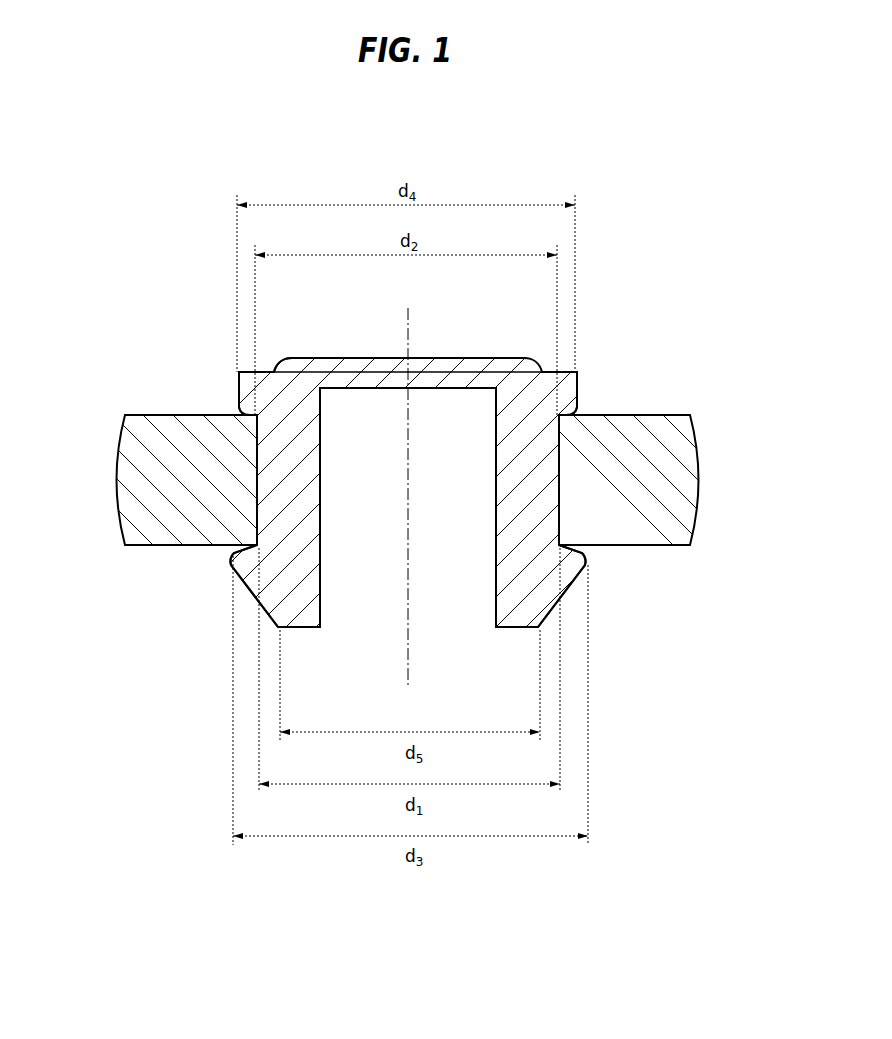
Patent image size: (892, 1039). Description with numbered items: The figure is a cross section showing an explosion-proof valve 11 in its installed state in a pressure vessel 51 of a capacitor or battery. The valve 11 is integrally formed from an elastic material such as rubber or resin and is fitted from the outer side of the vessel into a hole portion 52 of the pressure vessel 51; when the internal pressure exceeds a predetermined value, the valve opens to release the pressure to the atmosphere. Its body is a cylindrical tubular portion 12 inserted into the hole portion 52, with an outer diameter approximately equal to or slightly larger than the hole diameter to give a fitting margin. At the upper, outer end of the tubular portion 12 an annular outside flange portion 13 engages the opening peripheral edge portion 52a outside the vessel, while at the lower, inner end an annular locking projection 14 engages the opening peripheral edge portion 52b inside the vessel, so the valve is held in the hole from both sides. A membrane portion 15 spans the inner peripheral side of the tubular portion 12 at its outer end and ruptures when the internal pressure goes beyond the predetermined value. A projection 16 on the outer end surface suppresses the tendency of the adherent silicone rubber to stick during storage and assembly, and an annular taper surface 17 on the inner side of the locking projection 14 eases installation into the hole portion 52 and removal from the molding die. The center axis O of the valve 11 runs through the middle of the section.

The explosion-proof valve 11 is at (578, 374).
The tubular portion 12 is at (283, 482).
The outside flange portion 13 is at (239, 390).
The locking projection 14 is at (237, 556).
The membrane portion 15 is at (362, 375).
The projection 16 is at (277, 357).
The taper surface 17 is at (248, 598).
The pressure vessel 51 is at (660, 457).
The hole portion 52 is at (548, 492).
The opening peripheral edge portion outside the vessel 52a is at (578, 391).
The opening peripheral edge portion inside the vessel 52b is at (588, 563).
The center axis O is at (410, 641).